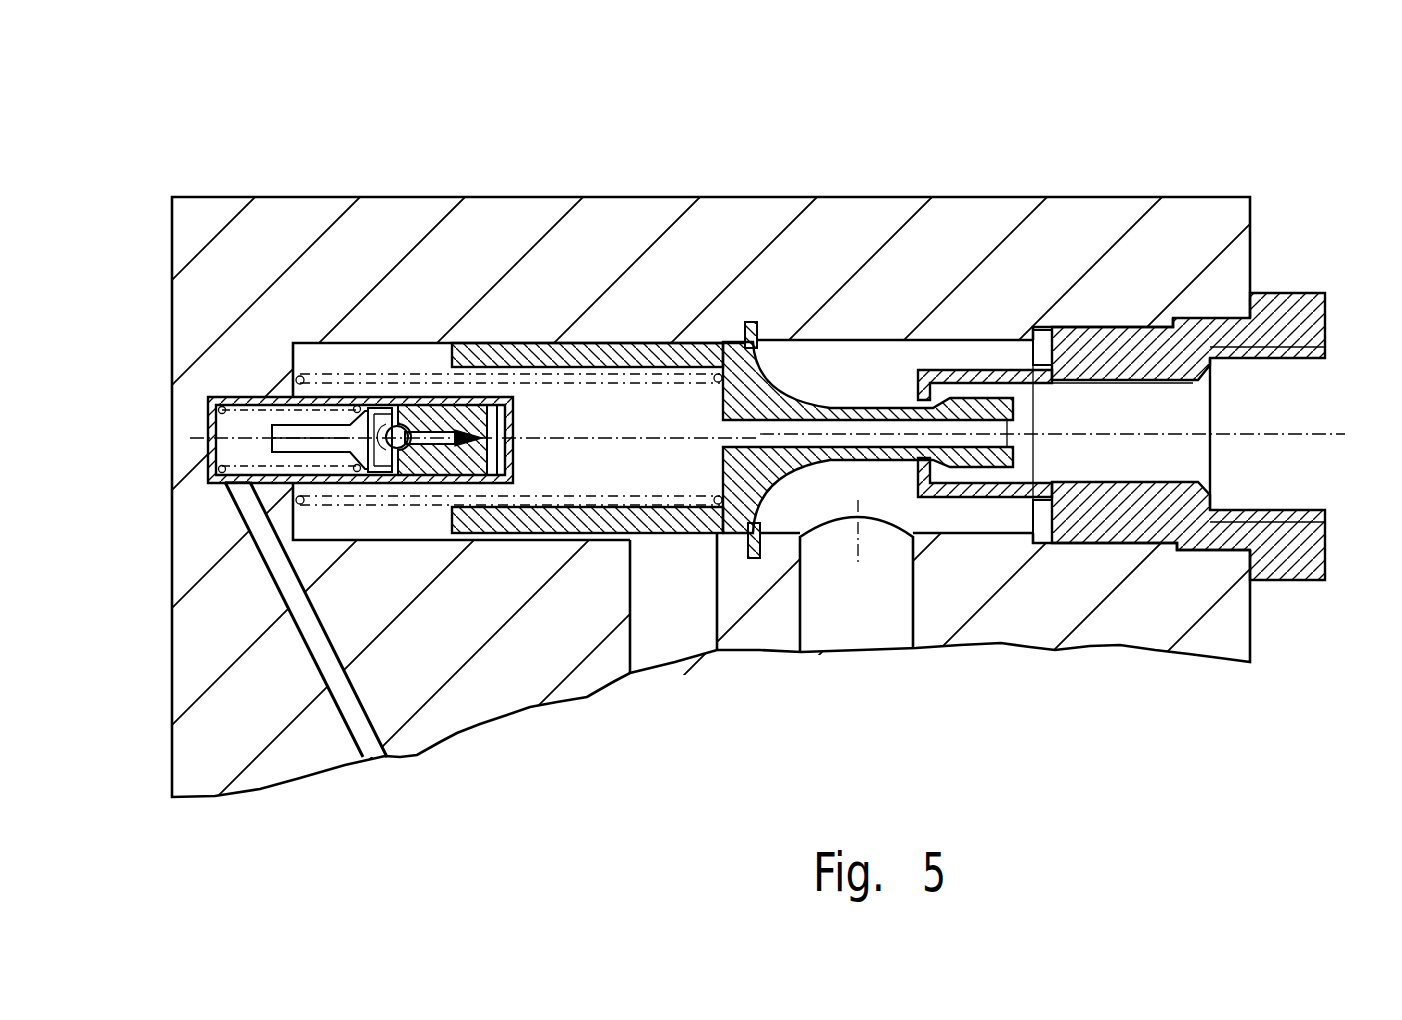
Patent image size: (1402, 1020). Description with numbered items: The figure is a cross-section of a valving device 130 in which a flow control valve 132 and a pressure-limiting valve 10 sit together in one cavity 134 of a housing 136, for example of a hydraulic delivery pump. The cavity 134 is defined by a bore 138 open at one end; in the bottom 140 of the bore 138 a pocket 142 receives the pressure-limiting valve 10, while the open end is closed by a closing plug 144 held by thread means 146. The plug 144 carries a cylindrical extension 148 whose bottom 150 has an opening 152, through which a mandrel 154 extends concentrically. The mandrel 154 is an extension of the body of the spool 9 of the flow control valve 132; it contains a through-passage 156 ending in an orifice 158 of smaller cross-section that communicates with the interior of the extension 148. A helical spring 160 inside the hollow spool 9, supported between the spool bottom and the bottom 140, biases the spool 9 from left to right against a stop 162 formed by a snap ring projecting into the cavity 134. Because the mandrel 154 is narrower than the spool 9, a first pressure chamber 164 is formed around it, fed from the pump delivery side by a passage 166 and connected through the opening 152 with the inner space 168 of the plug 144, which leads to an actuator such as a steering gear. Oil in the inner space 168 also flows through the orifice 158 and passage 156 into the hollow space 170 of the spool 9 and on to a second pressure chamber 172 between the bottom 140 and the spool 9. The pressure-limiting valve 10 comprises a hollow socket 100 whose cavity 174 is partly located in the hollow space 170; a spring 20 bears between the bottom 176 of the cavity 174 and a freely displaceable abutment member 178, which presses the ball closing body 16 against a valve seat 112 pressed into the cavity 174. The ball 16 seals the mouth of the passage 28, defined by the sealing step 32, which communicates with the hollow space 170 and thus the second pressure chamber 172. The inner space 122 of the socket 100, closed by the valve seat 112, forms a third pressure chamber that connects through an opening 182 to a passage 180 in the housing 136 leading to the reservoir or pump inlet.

The spool 9 is at (498, 343).
The pressure-limiting valve 10 is at (247, 388).
The closing body 16 is at (415, 484).
The spring 20 is at (206, 422).
The passage 28 is at (505, 478).
The sealing step 32 is at (392, 482).
The hollow socket 100 is at (393, 396).
The valve seat 112 is at (478, 484).
The inner space 122 is at (190, 440).
The valving device 130 is at (1265, 275).
The flow control valve 132 is at (640, 335).
The cavity 134 is at (855, 338).
The housing 136 is at (1068, 240).
The bore 138 is at (445, 343).
The bottom 140 is at (292, 378).
The pocket 142 is at (207, 440).
The closing plug 144 is at (1300, 560).
The thread means 146 is at (1132, 318).
The extension 148 is at (945, 370).
The bottom 150 is at (918, 548).
The opening 152 is at (918, 385).
The mandrel 154 is at (776, 395).
The through-passage 156 is at (808, 425).
The orifice 158 is at (1055, 545).
The helical spring 160 is at (318, 503).
The stop 162 is at (745, 322).
The first pressure chamber 164 is at (758, 560).
The passage 166 is at (886, 620).
The inner space 168 is at (1092, 423).
The hollow space 170 is at (577, 427).
The second pressure chamber 172 is at (322, 374).
The cavity 174 is at (558, 535).
The bottom 176 is at (224, 462).
The abutment member 178 is at (222, 406).
The passage 180 is at (347, 697).
The opening 182 is at (240, 483).